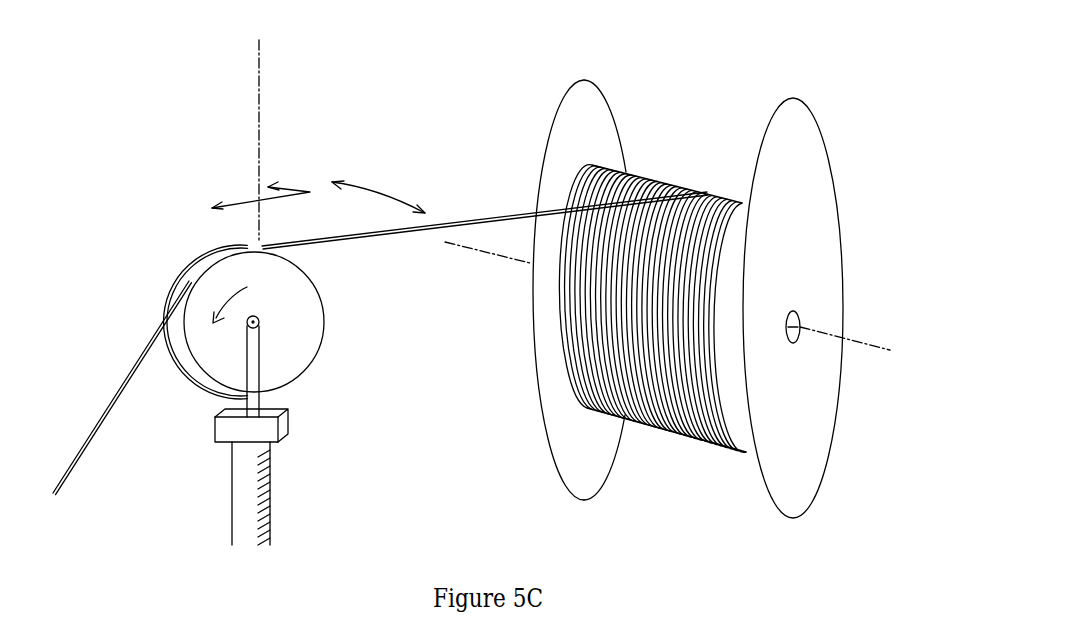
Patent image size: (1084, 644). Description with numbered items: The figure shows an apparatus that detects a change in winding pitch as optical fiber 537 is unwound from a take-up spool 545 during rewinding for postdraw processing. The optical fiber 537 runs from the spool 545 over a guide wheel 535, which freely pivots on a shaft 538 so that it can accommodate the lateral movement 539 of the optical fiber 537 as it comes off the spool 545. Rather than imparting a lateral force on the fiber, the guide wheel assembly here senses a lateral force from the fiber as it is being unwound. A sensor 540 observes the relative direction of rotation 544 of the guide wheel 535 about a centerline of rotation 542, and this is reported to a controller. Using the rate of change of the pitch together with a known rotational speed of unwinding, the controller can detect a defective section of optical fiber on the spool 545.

The guide wheel 535 is at (325, 308).
The optical fiber 537 is at (490, 216).
The shaft 538 is at (272, 502).
The lateral movement 539 is at (367, 190).
The sensor 540 is at (278, 418).
The centerline of rotation 542 is at (255, 78).
The direction of rotation 544 is at (243, 200).
The spool 545 is at (550, 452).